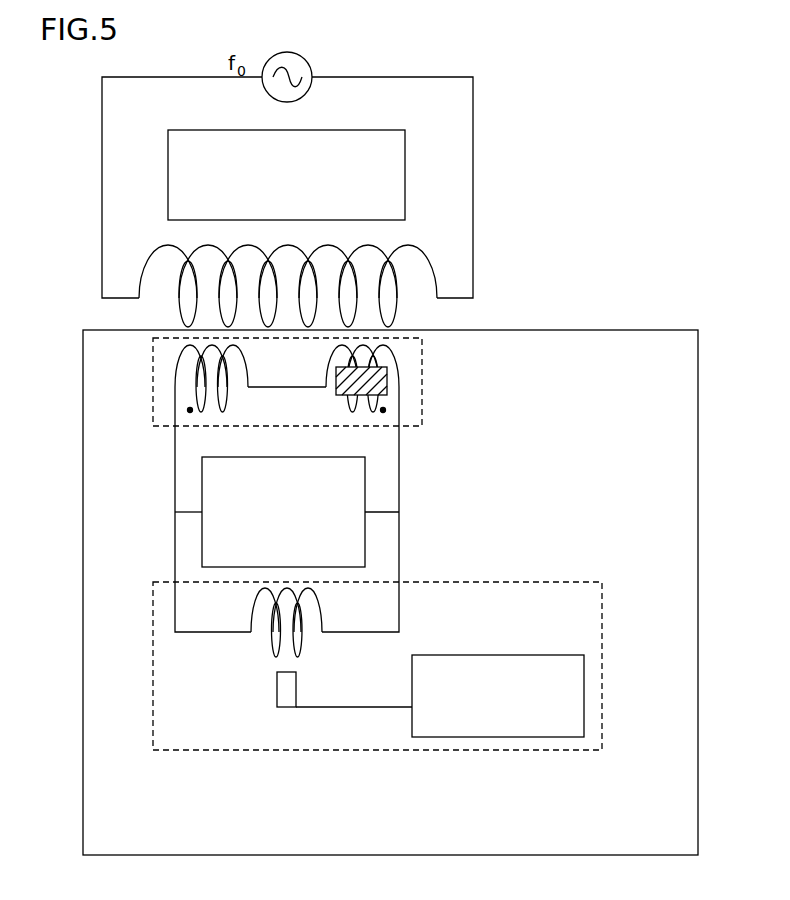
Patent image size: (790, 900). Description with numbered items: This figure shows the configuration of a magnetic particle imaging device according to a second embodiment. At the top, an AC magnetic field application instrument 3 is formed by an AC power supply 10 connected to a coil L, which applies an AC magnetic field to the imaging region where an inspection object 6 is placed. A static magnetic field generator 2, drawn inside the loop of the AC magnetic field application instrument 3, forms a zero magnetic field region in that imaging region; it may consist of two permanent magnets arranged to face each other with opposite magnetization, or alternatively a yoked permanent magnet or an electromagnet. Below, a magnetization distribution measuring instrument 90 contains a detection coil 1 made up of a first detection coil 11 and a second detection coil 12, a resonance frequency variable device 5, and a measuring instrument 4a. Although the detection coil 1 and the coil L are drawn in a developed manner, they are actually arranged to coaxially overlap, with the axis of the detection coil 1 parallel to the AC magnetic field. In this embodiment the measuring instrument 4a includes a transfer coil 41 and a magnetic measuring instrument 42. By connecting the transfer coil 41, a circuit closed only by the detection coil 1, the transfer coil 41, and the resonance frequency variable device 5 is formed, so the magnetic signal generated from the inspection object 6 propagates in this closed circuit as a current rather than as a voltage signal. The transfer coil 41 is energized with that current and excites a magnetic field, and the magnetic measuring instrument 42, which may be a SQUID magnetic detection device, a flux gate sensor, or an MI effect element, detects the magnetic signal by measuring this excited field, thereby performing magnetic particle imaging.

The detection coil 1 is at (423, 376).
The static magnetic field generator 2 is at (340, 130).
The AC magnetic field application instrument 3 is at (520, 180).
The resonance frequency variable device 5 is at (328, 456).
The inspection object 6 is at (380, 383).
The AC power supply 10 is at (293, 54).
The first detection coil 11 is at (401, 352).
The second detection coil 12 is at (176, 352).
The transfer coil 41 is at (271, 645).
The magnetic measuring instrument 42 is at (497, 739).
The measuring instrument 4a is at (604, 604).
The magnetization distribution measuring instrument 90 is at (637, 857).
The coil L is at (410, 252).